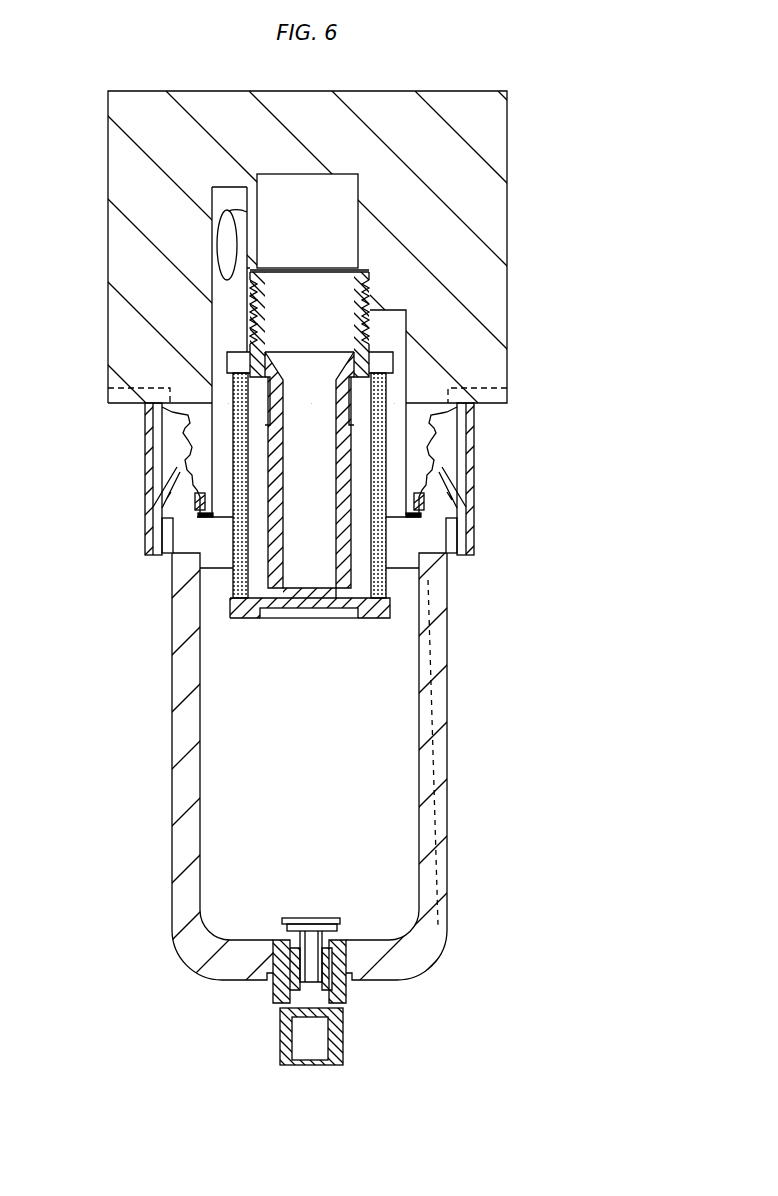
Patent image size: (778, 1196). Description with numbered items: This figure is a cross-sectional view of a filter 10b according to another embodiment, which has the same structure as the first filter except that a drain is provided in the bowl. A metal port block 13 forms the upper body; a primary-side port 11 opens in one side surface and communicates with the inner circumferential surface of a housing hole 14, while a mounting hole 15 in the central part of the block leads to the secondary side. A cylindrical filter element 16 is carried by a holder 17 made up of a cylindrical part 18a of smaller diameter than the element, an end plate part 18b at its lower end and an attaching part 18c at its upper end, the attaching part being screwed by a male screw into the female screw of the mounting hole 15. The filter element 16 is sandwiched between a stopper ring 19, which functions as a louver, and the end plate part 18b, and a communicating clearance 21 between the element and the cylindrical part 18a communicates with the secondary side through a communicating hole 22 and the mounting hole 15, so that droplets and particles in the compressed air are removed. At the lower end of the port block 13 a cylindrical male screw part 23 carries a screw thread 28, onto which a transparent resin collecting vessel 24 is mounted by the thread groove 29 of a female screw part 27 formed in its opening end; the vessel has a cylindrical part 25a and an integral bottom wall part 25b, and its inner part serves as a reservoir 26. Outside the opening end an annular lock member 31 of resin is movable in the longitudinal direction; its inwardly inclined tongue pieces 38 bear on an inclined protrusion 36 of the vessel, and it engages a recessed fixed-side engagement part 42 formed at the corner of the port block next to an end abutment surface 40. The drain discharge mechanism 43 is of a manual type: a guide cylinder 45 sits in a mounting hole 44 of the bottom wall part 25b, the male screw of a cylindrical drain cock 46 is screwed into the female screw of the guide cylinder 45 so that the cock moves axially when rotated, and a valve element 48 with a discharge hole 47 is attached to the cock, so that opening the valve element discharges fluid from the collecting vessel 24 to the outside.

The port block 13 is at (478, 118).
The mounting hole 15 is at (358, 208).
The filter 10b is at (545, 243).
The primary-side port 11 is at (225, 262).
The attaching part 18c is at (372, 296).
The housing hole 14 is at (398, 320).
The communicating hole 22 is at (237, 397).
The stopper ring 19 is at (377, 362).
The fixed-side engagement part 42 is at (513, 397).
The end abutment surface 40 is at (143, 405).
The female screw part 27 is at (456, 412).
The thread groove 29 is at (182, 450).
The screw thread 28 is at (437, 437).
The male screw part 23 is at (437, 458).
The inclined protrusion 36 is at (182, 498).
The tongue piece 38 is at (470, 488).
The annular lock member 31 is at (477, 533).
The filter element 16 is at (233, 550).
The cylindrical part 18a is at (340, 542).
The holder 17 is at (353, 580).
The end plate part 18b is at (310, 610).
The communicating clearance 21 is at (258, 580).
The collecting vessel 24 is at (450, 735).
The cylindrical part 25a is at (435, 828).
The bottom wall part 25b is at (247, 950).
The reservoir 26 is at (299, 910).
The drain discharge mechanism 43 is at (292, 880).
The valve element 48 is at (345, 928).
The mounting hole 44 is at (280, 995).
The guide cylinder 45 is at (342, 993).
The drain cock 46 is at (335, 1037).
The discharge hole 47 is at (312, 1000).